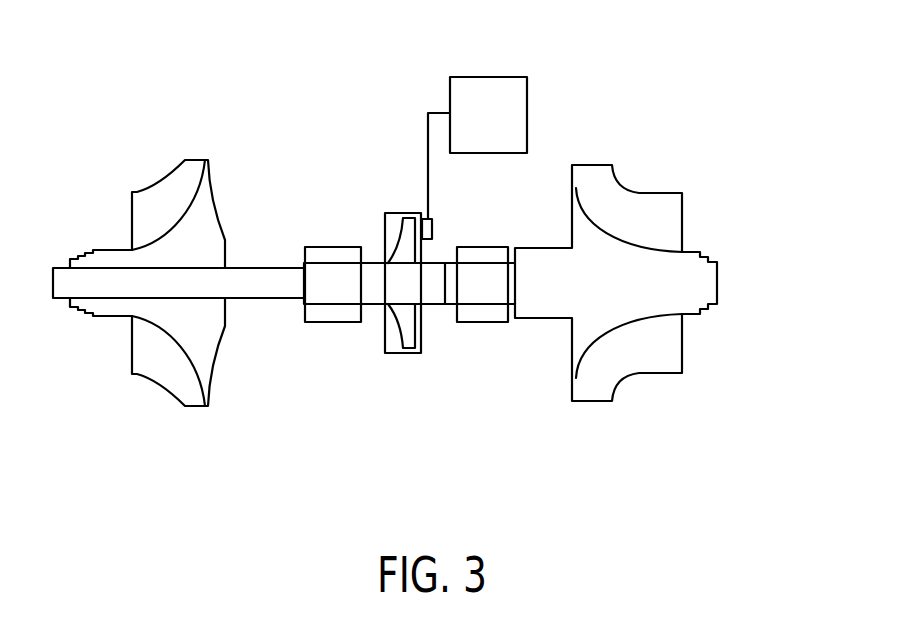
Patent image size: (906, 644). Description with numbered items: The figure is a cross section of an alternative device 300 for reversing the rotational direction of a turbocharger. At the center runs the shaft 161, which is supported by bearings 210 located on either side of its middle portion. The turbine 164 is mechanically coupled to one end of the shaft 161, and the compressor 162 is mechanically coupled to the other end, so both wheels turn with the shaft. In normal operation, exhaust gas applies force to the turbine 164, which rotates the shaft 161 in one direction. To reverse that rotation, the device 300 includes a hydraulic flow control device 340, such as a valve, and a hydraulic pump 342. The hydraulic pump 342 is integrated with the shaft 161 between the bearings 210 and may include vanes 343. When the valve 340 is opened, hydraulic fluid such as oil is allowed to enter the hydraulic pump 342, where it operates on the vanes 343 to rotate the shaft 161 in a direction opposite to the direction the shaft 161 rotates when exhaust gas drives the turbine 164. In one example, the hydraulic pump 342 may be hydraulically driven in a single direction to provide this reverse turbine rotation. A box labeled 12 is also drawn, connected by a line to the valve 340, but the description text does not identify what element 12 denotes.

The device 300 is at (702, 56).
The controller 12 is at (503, 128).
The shaft 161 is at (249, 299).
The compressor 162 is at (200, 408).
The turbine 164 is at (593, 401).
The bearings 210 is at (328, 246).
The hydraulic flow control device 340 is at (433, 219).
The hydraulic pump 342 is at (403, 353).
The vanes 343 is at (396, 246).